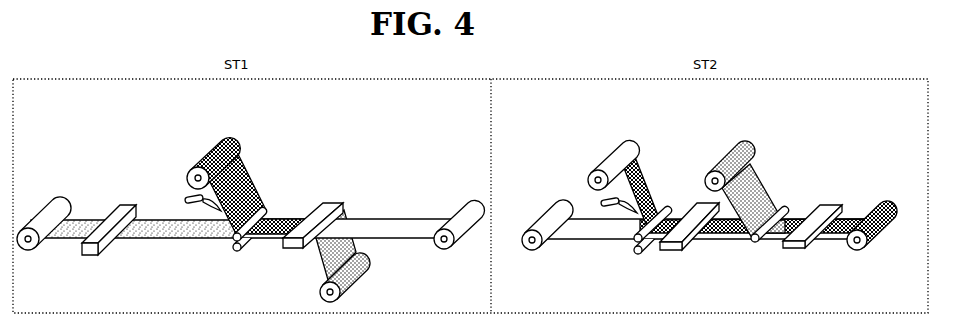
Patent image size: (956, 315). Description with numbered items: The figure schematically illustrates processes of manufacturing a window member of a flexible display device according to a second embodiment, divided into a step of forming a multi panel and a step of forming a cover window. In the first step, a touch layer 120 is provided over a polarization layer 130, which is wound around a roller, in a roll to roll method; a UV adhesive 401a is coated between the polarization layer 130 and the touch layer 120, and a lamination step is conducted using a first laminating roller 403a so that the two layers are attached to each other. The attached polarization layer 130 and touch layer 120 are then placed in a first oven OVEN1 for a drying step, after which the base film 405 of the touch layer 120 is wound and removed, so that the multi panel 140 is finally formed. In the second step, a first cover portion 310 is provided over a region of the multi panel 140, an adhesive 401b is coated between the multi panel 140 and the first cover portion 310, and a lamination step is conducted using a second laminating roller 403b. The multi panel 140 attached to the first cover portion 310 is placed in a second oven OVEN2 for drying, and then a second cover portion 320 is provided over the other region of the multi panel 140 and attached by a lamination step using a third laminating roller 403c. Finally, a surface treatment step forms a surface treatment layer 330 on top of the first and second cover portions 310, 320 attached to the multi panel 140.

The touch layer 120 is at (242, 182).
The polarization layer 130 is at (137, 242).
The multi panel 140 is at (395, 239).
The UV adhesive 401a is at (187, 196).
The adhesive 401b is at (603, 204).
The first laminating roller 403a is at (235, 252).
The second laminating roller 403b is at (638, 255).
The third laminating roller 403c is at (755, 243).
The base film 405 is at (322, 263).
The first cover portion 310 is at (641, 182).
The second cover portion 320 is at (752, 189).
The surface treatment layer 330 is at (852, 218).
The first oven OVEN1 is at (327, 205).
The second oven OVEN2 is at (673, 251).